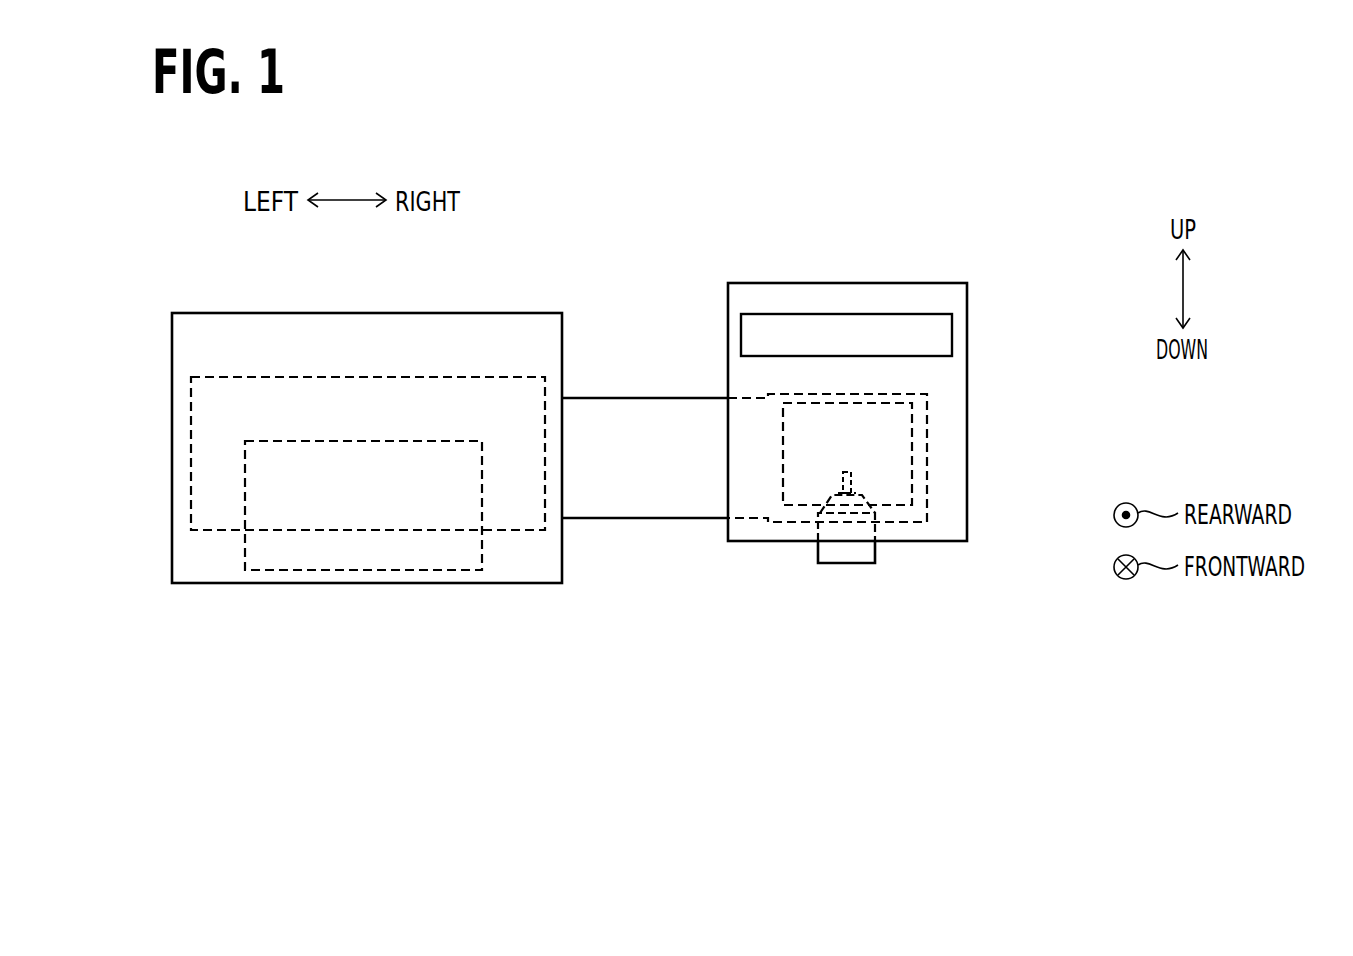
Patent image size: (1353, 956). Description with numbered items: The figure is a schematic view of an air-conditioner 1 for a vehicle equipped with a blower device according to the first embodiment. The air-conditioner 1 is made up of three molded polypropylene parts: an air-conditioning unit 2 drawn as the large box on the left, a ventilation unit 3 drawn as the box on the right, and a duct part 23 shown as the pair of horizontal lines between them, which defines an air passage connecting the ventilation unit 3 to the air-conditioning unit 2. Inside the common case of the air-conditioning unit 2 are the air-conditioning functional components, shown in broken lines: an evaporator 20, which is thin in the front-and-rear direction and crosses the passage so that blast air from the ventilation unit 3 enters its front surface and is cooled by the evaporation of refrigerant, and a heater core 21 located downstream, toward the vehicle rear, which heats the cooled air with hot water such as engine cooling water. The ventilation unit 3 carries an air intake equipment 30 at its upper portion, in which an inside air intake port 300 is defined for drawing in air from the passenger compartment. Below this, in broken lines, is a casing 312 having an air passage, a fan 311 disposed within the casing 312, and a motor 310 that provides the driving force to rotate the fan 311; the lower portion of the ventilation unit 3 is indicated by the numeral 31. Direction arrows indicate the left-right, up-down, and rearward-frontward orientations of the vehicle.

The air-conditioner 1 is at (722, 648).
The air-conditioning unit 2 is at (584, 568).
The ventilation unit 3 is at (881, 438).
The evaporator 20 is at (270, 377).
The heater core 21 is at (243, 557).
The duct part 23 is at (663, 522).
The air intake equipment 30 is at (970, 326).
The inside air intake port 300 is at (915, 325).
The lower portion 31 is at (970, 541).
The motor 310 is at (853, 552).
The fan 311 is at (912, 487).
The casing 312 is at (927, 440).